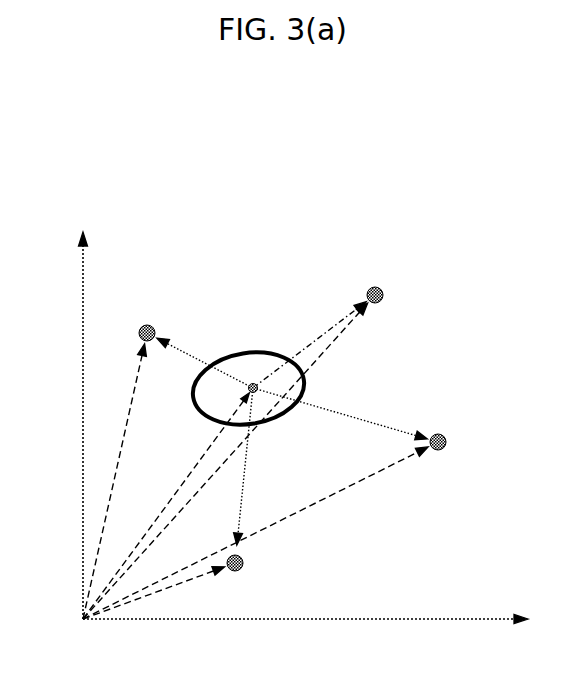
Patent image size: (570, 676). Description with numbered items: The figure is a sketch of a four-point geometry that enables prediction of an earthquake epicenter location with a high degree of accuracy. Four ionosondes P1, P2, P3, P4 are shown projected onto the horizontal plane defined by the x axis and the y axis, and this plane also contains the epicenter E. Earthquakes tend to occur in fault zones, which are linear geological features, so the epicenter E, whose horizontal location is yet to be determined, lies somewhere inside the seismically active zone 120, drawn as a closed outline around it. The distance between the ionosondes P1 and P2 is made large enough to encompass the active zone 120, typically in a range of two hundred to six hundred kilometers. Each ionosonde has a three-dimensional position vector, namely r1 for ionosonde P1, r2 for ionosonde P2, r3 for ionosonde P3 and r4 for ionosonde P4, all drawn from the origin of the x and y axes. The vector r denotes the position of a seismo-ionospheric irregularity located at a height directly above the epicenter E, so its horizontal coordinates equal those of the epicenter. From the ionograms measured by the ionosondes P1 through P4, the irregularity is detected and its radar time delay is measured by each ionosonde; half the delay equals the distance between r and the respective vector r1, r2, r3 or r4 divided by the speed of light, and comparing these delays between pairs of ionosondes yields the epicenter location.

The seismically active zone 120 is at (272, 339).
The ionosonde P1 is at (146, 313).
The ionosonde P2 is at (381, 277).
The ionosonde P3 is at (433, 421).
The ionosonde P4 is at (248, 583).
The epicenter E is at (263, 410).
The position vector of SII r is at (166, 506).
The position vector of ionosonde P1 r1 is at (114, 481).
The position vector of ionosonde P2 r2 is at (225, 461).
The position vector of ionosonde P3 r3 is at (255, 533).
The position vector of ionosonde P4 r4 is at (154, 593).
The x axis x is at (305, 631).
The y axis y is at (70, 425).